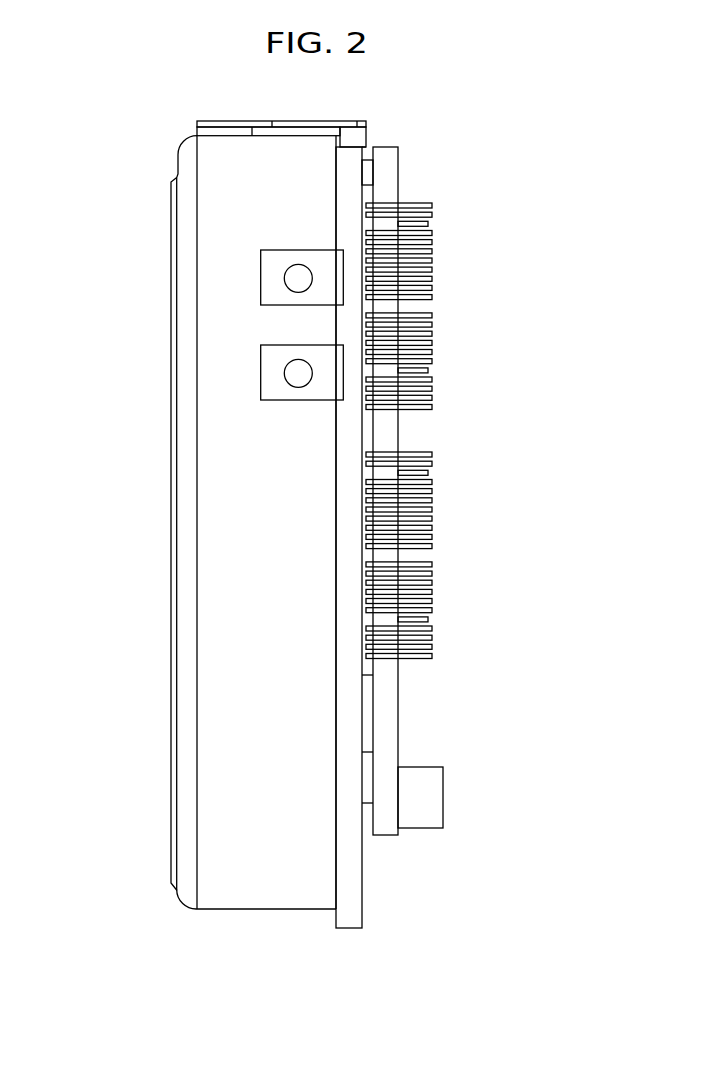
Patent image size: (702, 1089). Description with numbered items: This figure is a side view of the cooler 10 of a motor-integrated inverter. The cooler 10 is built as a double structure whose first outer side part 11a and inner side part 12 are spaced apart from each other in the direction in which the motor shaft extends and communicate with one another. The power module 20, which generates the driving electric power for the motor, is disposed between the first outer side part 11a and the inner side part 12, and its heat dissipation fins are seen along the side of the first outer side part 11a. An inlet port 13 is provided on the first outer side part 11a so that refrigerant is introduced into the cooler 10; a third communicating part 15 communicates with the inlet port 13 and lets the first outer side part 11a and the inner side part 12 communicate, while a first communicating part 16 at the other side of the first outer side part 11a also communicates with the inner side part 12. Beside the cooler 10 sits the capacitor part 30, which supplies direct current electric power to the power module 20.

The cooler 10 is at (310, 582).
The first outer side part 11a is at (385, 693).
The inner side part 12 is at (347, 875).
The inlet port 13 is at (428, 798).
The third communicating part 15 is at (367, 767).
The first communicating part 16 is at (368, 172).
The power module 20 is at (367, 308).
The capacitor part 30 is at (223, 592).